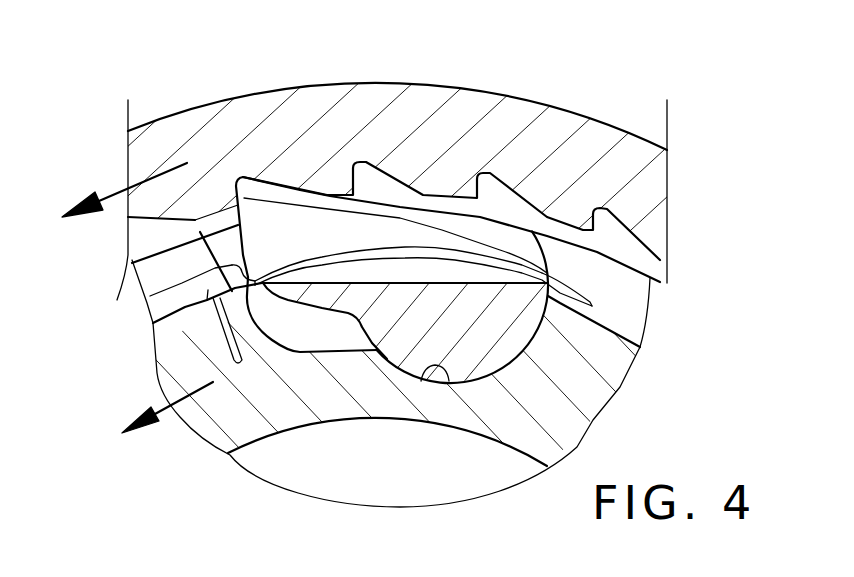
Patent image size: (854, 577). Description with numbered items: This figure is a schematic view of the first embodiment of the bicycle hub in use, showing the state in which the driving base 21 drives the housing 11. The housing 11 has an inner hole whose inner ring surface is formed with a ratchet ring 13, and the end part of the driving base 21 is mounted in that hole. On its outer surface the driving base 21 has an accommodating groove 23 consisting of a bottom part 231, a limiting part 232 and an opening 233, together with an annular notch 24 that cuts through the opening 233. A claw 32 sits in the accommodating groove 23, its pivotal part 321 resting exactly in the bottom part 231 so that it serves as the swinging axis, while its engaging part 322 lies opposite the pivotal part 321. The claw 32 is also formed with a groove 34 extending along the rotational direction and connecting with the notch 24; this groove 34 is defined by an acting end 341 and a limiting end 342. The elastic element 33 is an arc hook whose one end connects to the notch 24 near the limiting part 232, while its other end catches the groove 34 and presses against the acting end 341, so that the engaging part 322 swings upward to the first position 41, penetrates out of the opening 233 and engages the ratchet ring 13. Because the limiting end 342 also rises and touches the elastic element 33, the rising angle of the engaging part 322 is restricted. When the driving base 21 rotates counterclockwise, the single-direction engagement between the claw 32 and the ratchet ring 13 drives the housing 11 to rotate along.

The housing 11 is at (590, 130).
The ratchet ring 13 is at (372, 165).
The driving base 21 is at (600, 393).
The accommodating groove 23 is at (347, 333).
The bottom part 231 is at (428, 368).
The limiting part 232 is at (276, 325).
The opening 233 is at (150, 296).
The notch 24 is at (637, 320).
The claw 32 is at (345, 190).
The pivotal part 321 is at (483, 347).
The engaging part 322 is at (247, 187).
The elastic element 33 is at (452, 248).
The groove 34 is at (414, 232).
The acting end 341 is at (575, 284).
The limiting end 342 is at (278, 262).
The first position 41 is at (229, 193).